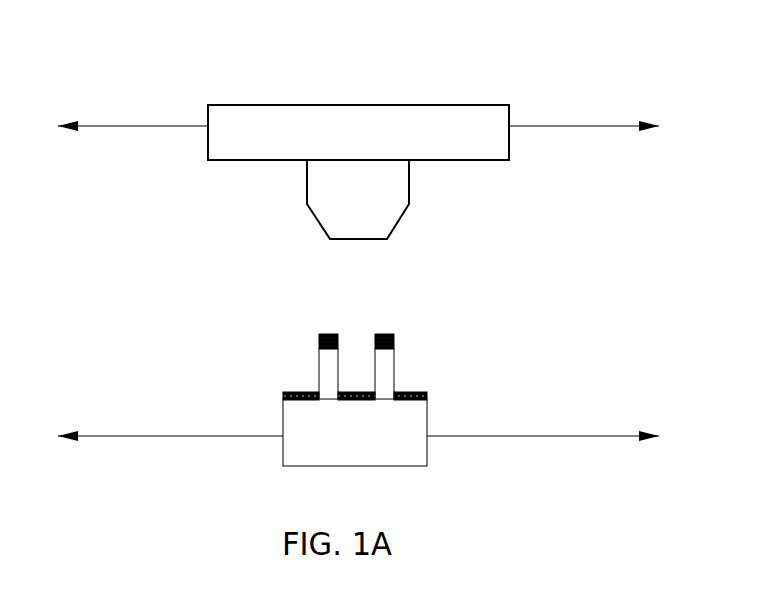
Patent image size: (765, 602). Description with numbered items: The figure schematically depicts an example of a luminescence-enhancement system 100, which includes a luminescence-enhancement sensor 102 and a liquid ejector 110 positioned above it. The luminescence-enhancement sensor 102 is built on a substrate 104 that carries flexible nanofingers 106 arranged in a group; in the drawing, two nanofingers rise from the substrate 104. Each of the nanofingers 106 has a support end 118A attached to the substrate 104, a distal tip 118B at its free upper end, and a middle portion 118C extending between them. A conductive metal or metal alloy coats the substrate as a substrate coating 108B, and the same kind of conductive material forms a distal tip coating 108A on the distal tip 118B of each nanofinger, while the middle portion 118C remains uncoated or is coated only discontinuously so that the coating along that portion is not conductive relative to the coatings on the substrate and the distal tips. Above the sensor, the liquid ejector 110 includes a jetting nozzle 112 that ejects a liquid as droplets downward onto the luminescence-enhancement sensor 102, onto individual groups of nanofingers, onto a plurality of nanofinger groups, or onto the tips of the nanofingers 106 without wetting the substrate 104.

The luminescence-enhancement system 100 is at (358, 130).
The luminescence-enhancement sensor 102 is at (358, 391).
The substrate 104 is at (355, 432).
The flexible nanofingers 106 is at (388, 378).
The distal tip coating 108A is at (393, 344).
The substrate coating 108B is at (426, 396).
The liquid ejector 110 is at (358, 132).
The jetting nozzle 112 is at (358, 199).
The support end 118A is at (310, 383).
The distal tip 118B is at (342, 327).
The middle portion 118C is at (310, 352).